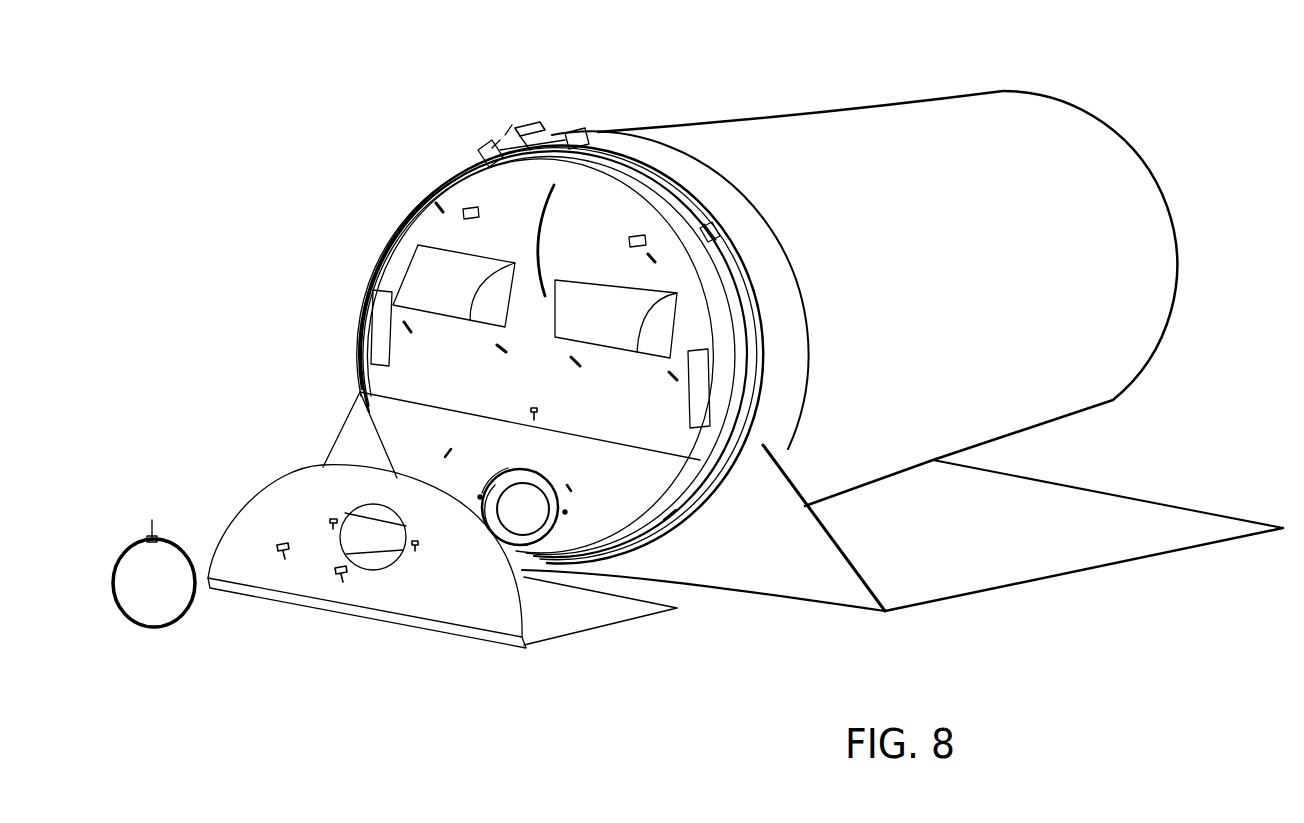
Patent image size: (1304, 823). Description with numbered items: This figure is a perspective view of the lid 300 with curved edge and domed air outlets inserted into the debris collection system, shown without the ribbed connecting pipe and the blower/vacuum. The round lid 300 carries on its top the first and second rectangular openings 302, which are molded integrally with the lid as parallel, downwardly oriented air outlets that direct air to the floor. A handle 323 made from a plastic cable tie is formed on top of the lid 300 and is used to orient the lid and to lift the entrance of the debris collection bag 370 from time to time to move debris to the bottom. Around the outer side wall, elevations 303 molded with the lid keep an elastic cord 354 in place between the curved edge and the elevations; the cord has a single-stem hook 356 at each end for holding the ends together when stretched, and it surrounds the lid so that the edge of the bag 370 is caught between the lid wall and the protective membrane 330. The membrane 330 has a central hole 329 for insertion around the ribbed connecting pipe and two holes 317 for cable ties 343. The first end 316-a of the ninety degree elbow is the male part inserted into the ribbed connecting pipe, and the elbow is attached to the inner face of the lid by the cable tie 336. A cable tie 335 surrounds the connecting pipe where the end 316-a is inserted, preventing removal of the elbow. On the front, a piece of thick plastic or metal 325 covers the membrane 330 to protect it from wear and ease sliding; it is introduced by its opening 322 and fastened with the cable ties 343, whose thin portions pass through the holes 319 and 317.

The lid 300 is at (507, 203).
The rectangular openings for the air outlet 302 is at (452, 285).
The elevations 303 is at (707, 230).
The first end of the 90 degree elbow 316-a is at (532, 480).
The holes 317 is at (473, 487).
The holes 319 is at (333, 519).
The opening 322 is at (378, 576).
The handle 323 is at (547, 237).
The piece of thick plastic or metal 325 is at (288, 498).
The hole 329 is at (515, 462).
The protective membrane 330 is at (603, 480).
The plastic cable tie 335 is at (170, 638).
The cable tie 336 is at (533, 410).
The plastic cable ties 343 is at (283, 556).
The elastic cord 354 is at (617, 145).
The hook 356 is at (537, 117).
The debris collection bag 370 is at (907, 145).